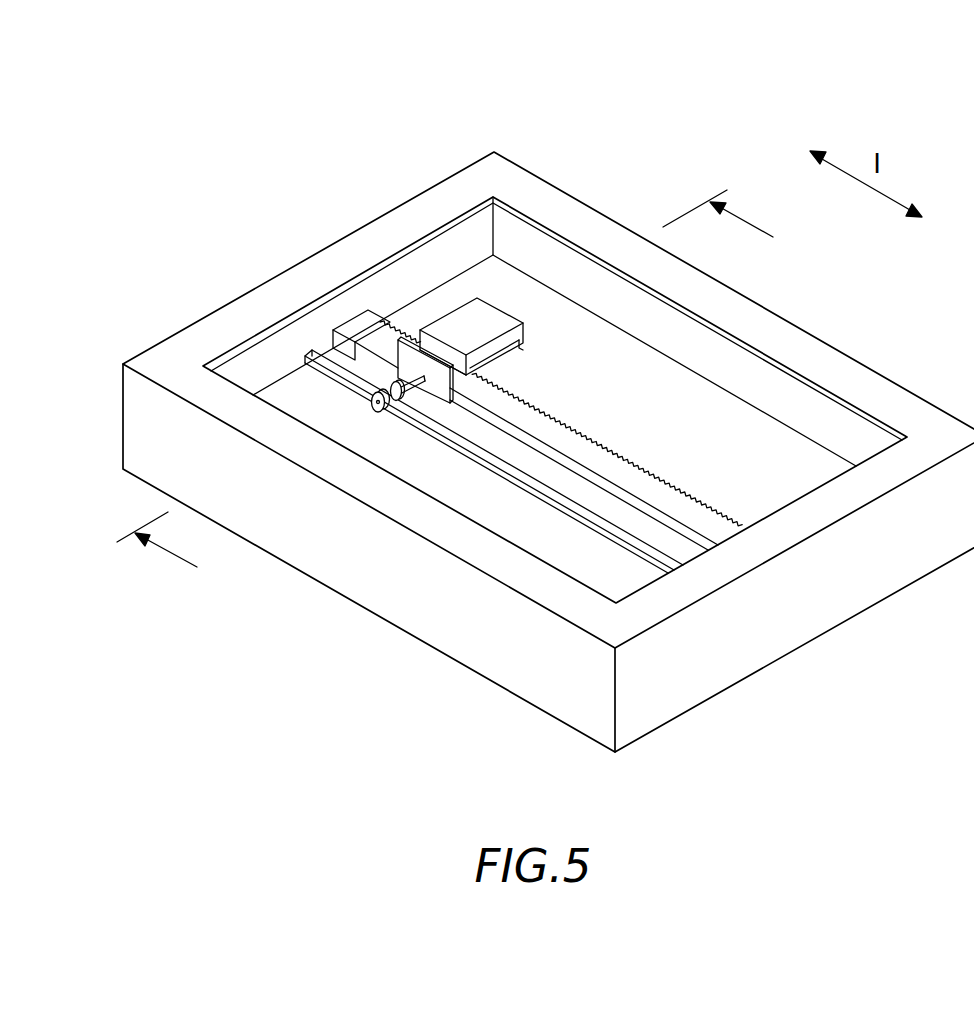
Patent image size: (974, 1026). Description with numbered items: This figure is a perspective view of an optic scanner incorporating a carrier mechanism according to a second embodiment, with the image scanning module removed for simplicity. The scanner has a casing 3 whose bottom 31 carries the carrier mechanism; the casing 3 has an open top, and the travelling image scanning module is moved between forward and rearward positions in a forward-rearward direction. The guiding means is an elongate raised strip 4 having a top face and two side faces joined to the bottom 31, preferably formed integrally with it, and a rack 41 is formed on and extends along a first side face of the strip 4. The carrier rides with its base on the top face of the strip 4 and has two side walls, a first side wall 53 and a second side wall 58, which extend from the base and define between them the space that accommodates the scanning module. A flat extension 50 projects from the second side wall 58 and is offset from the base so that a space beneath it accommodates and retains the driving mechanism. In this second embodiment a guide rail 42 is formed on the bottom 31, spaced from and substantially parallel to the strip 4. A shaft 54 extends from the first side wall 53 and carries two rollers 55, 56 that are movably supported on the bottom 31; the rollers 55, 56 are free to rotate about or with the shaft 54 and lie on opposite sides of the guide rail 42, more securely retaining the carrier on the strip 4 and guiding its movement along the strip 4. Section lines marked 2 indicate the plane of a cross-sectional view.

The section line 2 is at (455, 391).
The casing 3 is at (848, 587).
The bottom 31 is at (705, 422).
The elongate raised strip 4 is at (561, 433).
The rack 41 is at (570, 427).
The guide rail 42 is at (577, 517).
The flat extension 50 is at (480, 323).
The first side wall 53 is at (407, 363).
The shaft 54 is at (405, 392).
The roller 55 is at (373, 413).
The roller 56 is at (398, 408).
The second side wall 58 is at (443, 350).